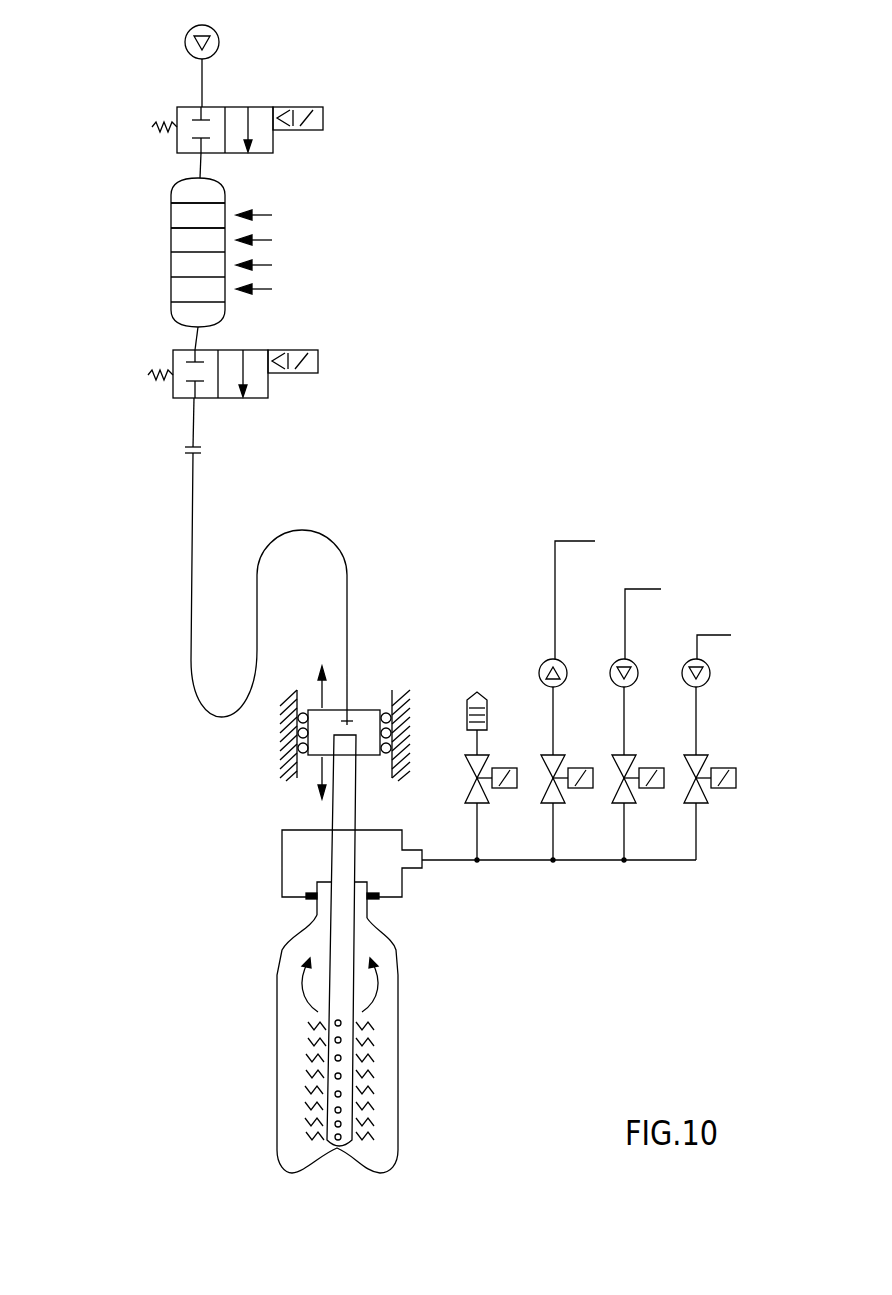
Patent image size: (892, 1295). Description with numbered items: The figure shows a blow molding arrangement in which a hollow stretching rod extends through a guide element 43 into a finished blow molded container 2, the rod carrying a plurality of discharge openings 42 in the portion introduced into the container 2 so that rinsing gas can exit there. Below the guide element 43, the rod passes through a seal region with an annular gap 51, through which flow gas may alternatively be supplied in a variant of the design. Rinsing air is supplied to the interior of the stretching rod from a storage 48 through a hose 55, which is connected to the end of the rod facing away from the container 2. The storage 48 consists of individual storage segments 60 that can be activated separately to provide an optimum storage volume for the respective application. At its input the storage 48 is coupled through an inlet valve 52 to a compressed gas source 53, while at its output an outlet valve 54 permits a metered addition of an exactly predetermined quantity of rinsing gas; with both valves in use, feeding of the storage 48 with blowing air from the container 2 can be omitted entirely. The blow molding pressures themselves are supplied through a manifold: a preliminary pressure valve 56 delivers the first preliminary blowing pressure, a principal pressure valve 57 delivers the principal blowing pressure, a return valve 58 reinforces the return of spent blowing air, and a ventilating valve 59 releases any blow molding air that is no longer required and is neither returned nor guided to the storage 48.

The container 2 is at (400, 1030).
The discharge opening 42 is at (337, 1108).
The guide element 43 is at (283, 757).
The storage 48 is at (173, 262).
The annular gap 51 is at (322, 905).
The inlet valve 52 is at (178, 148).
The compressed gas source 53 is at (186, 46).
The outlet valve 54 is at (174, 398).
The hose 55 is at (189, 670).
The preliminary pressure valve 56 is at (698, 800).
The principal pressure valve 57 is at (626, 800).
The return valve 58 is at (554, 800).
The ventilating valve 59 is at (481, 800).
The storage segments 60 is at (190, 215).